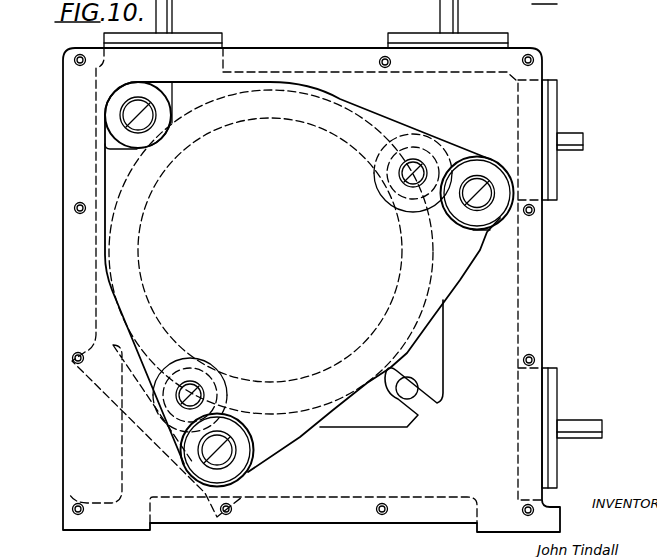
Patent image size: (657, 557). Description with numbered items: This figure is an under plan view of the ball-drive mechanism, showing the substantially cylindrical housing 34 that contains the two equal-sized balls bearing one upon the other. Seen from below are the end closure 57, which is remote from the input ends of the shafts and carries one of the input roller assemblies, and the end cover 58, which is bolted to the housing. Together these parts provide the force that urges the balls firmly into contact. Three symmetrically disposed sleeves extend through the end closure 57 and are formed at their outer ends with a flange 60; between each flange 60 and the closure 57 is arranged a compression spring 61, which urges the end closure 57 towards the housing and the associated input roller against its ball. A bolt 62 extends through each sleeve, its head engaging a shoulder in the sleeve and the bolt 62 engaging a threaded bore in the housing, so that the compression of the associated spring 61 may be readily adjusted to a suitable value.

The housing 34 is at (72, 423).
The end closure 57 is at (441, 345).
The end cover 58 is at (465, 266).
The flange 60 is at (165, 103).
The compression spring 61 is at (473, 220).
The bolt 62 is at (147, 122).